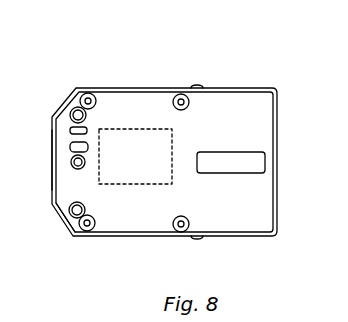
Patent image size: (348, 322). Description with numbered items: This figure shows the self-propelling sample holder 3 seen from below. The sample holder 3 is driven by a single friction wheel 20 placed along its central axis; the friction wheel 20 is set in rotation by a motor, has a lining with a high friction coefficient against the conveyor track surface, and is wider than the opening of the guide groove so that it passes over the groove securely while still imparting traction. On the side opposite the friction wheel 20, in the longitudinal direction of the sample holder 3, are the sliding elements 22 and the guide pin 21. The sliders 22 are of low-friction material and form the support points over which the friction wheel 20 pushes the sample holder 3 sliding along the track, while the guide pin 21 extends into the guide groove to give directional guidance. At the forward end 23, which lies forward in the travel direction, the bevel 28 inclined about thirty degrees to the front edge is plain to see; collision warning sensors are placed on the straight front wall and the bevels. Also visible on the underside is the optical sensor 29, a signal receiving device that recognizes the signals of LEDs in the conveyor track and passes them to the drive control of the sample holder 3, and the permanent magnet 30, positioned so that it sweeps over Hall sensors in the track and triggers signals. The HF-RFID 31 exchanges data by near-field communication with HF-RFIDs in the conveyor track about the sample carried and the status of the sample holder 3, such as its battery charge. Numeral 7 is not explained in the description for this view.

The sample holder 3 is at (241, 82).
The side wall 7 is at (58, 221).
The friction wheel 20 is at (265, 163).
The guide pin 21 is at (72, 168).
The sliding elements 22 is at (80, 111).
The forward end 23 is at (48, 160).
The bevel 28 is at (59, 121).
The optical sensor 29 is at (88, 145).
The permanent magnet 30 is at (71, 134).
The HF-RFID 31 is at (141, 183).